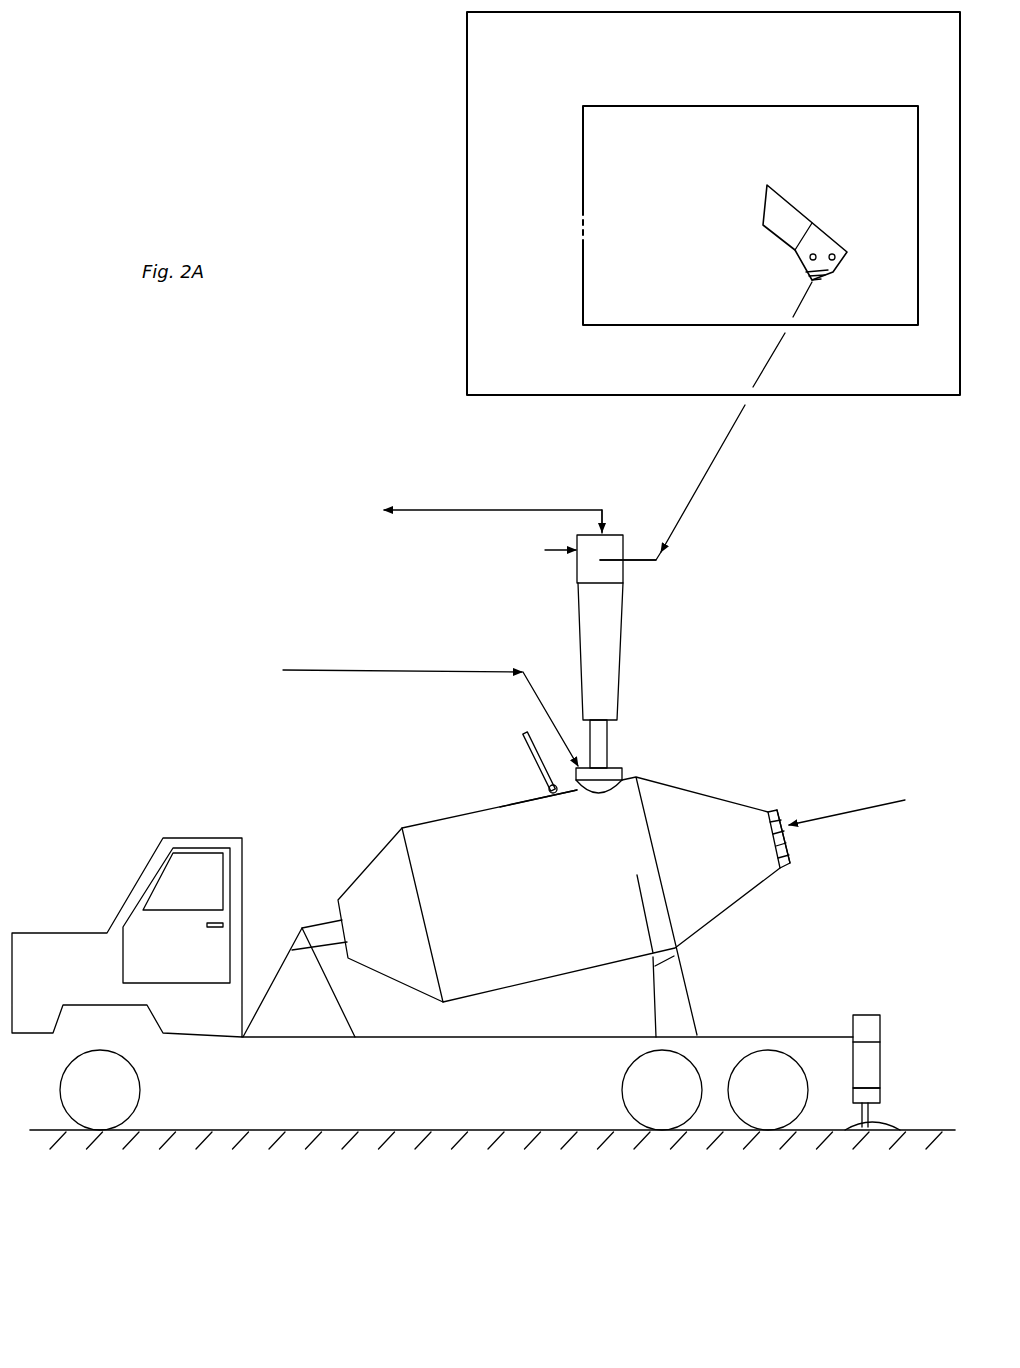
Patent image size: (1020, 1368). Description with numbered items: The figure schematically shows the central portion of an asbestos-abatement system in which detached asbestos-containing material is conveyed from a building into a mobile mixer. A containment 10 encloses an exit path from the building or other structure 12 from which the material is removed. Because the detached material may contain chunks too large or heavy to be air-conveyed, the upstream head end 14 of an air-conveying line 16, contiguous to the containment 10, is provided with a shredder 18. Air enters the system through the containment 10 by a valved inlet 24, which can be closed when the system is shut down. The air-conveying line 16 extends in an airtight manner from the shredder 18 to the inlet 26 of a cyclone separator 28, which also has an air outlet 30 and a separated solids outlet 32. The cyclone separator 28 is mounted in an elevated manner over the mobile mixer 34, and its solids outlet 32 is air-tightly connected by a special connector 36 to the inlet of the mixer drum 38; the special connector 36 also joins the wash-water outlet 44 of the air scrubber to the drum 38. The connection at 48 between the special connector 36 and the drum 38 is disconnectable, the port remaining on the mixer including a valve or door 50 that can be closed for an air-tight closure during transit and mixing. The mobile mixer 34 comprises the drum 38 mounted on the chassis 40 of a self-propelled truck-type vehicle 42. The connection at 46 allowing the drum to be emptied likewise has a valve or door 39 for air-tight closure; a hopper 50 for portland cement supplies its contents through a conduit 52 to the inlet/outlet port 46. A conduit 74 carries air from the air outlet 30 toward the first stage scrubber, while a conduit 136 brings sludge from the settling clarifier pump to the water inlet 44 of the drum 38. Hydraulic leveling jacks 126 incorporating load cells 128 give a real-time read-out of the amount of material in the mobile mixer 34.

The containment 10 is at (582, 152).
The building or other structure 12 is at (466, 68).
The upstream or head end 14 is at (820, 287).
The air-conveying line 16 is at (711, 453).
The shredder 18 is at (839, 234).
The valved inlet 24 is at (592, 223).
The inlet of cyclone separator 26 is at (620, 563).
The cyclone separator 28 is at (546, 550).
The air outlet 30 is at (609, 529).
The separated solids outlet 32 is at (596, 801).
The mobile mixer 34 is at (607, 1160).
The special connector 36 is at (623, 757).
The mixer drum 38 is at (693, 784).
The valve or door 39 is at (790, 809).
The chassis 40 is at (516, 1041).
The self-propelled truck-type vehicle 42 is at (82, 929).
The wash-water outlet 44 is at (582, 766).
The inlet/outlet port 46 is at (825, 837).
The connection 48 is at (619, 790).
The hopper 50 is at (524, 734).
The conduit 52 is at (880, 808).
The conduit 74 is at (443, 510).
The hydraulic leveling jacks 126 is at (882, 1054).
The load cells 128 is at (882, 1097).
The conduit 136 is at (327, 673).